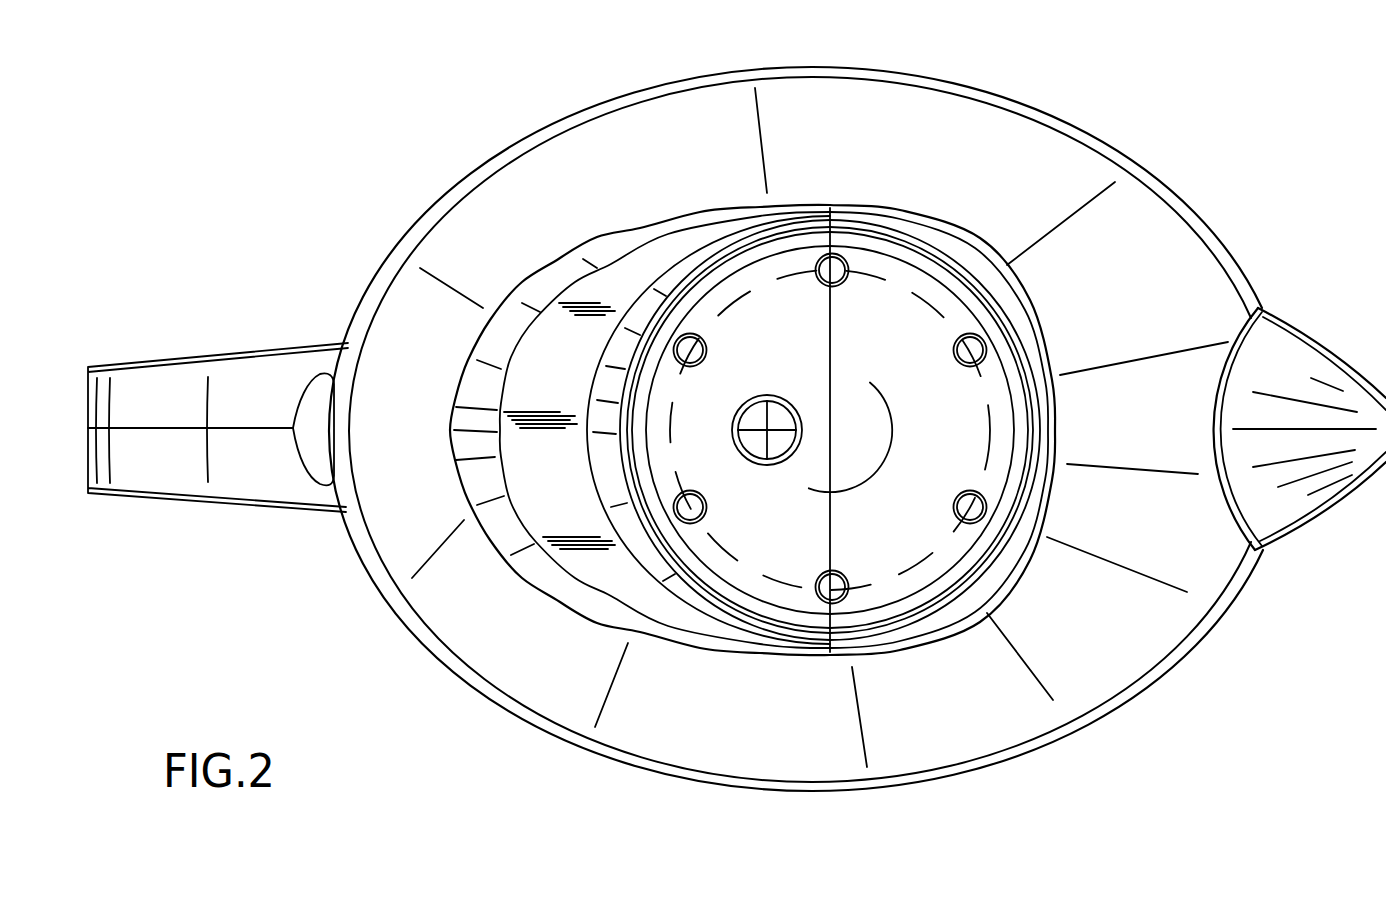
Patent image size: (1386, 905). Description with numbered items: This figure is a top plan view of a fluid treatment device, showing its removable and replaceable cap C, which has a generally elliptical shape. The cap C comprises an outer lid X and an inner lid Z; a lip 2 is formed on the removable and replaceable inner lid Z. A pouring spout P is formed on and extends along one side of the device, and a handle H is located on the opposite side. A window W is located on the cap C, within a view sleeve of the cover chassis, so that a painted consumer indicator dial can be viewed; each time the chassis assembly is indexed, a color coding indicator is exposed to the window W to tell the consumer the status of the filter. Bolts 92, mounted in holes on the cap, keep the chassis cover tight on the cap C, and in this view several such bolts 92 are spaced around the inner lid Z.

The removable and replaceable cap C is at (1035, 137).
The handle H is at (258, 372).
The pouring spout P is at (1318, 368).
The outer lid X is at (925, 726).
The lip 2 is at (598, 486).
The inner lid Z is at (922, 550).
The window W is at (779, 397).
The bolt 92 is at (690, 350).